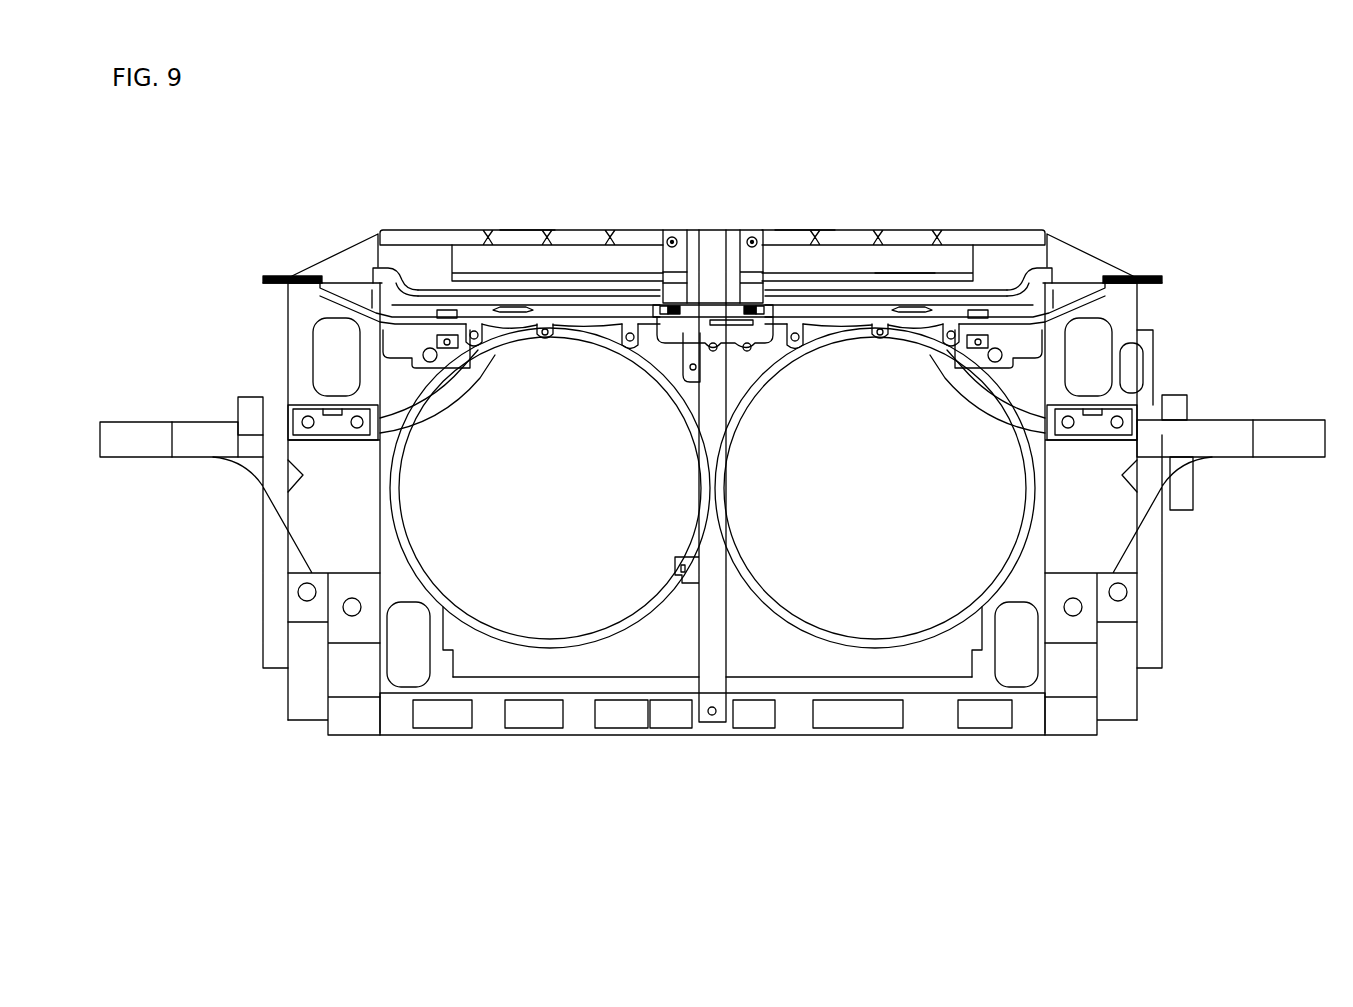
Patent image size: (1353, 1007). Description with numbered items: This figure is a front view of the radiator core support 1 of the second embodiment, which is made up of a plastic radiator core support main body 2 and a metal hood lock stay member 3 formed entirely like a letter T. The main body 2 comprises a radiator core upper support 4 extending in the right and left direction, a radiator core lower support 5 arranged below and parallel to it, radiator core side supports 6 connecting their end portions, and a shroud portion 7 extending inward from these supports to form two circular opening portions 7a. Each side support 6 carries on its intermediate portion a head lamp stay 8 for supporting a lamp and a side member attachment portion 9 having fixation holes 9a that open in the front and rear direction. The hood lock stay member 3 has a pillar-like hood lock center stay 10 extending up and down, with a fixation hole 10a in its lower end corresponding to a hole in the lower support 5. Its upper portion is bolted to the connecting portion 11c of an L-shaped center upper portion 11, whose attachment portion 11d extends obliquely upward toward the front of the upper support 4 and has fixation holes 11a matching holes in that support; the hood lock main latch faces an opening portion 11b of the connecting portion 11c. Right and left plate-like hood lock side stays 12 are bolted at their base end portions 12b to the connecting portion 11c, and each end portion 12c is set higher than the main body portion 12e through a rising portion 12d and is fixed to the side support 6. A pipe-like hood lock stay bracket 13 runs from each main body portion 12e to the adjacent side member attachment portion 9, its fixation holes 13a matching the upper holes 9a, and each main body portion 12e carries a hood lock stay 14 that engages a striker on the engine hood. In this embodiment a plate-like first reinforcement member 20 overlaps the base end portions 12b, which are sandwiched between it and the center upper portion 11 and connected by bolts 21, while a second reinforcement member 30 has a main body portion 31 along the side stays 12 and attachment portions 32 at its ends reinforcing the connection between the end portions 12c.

The radiator core support 1 is at (802, 221).
The radiator core support main body 2 is at (521, 222).
The hood lock stay member 3 is at (903, 258).
The radiator core upper support 4 is at (944, 223).
The radiator core lower support 5 is at (581, 745).
The radiator core side support 6 is at (277, 325).
The shroud portion 7 is at (650, 637).
The circular opening portion 7a is at (563, 645).
The head lamp stay 8 is at (152, 422).
The side member attachment portion 9 is at (305, 519).
The fixation hole 9a is at (350, 608).
The hood lock center stay 10 is at (727, 492).
The fixation hole 10a is at (713, 722).
The center upper portion 11 is at (713, 270).
The fixation hole 11a is at (671, 237).
The opening portion 11b is at (748, 330).
The connecting portion 11c is at (686, 372).
The attachment portion 11d is at (668, 275).
The hood lock side stay 12 is at (567, 294).
The base end portion 12b is at (603, 328).
The end portion 12c is at (280, 274).
The rising portion 12d is at (388, 300).
The main body portion 12e is at (548, 306).
The hood lock stay bracket 13 is at (438, 402).
The fixation hole 13a is at (353, 407).
The hood lock stay 14 is at (462, 358).
The first reinforcement member 20 is at (694, 385).
The bolt 21 is at (626, 346).
The second reinforcement member 30 is at (838, 276).
The main body portion 31 is at (486, 286).
The attachment portion 32 is at (272, 283).